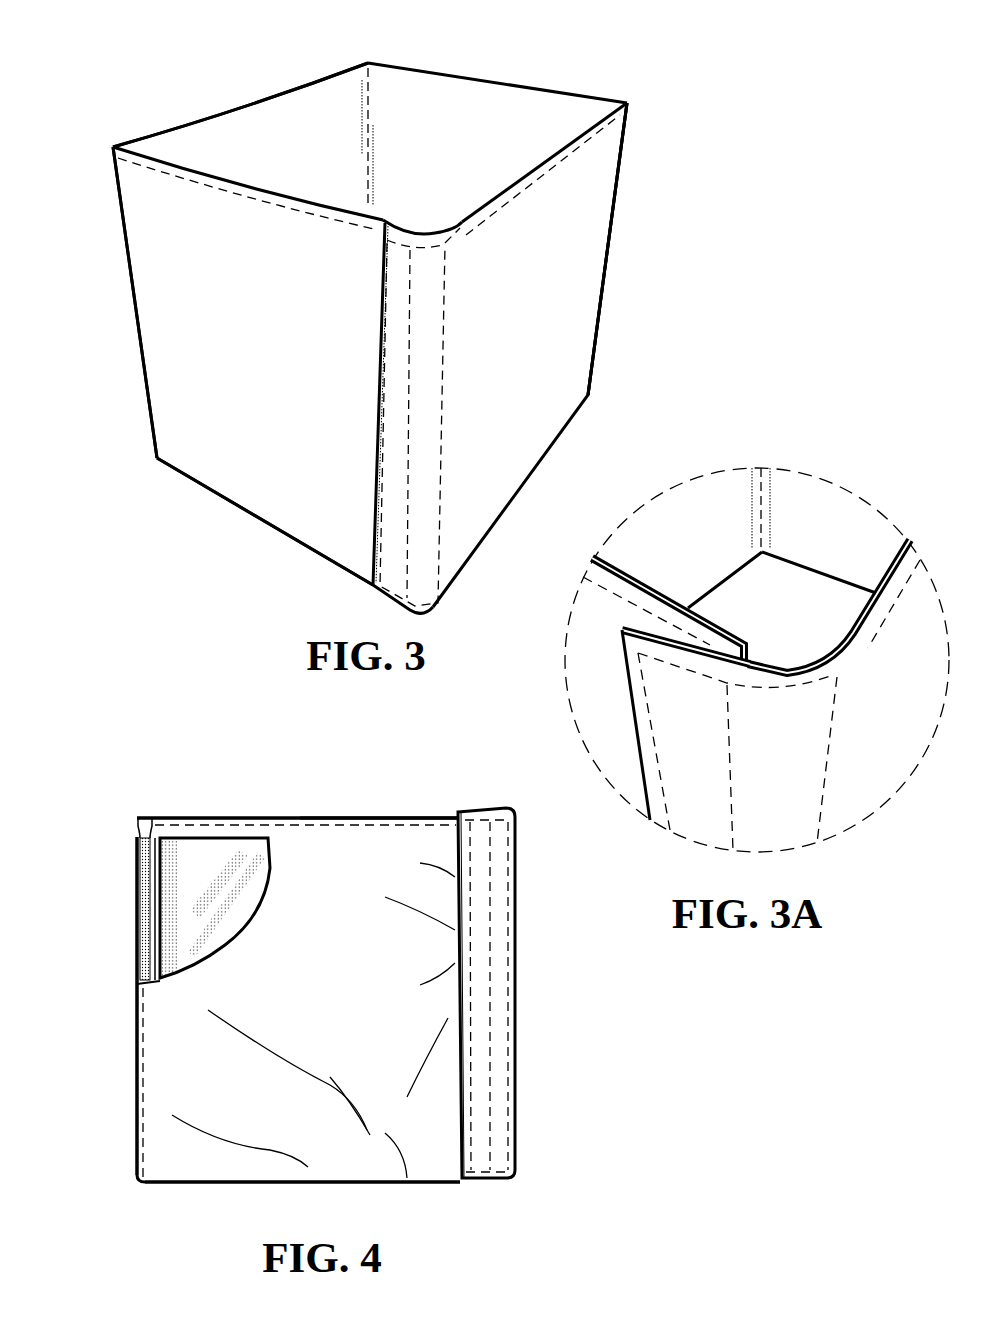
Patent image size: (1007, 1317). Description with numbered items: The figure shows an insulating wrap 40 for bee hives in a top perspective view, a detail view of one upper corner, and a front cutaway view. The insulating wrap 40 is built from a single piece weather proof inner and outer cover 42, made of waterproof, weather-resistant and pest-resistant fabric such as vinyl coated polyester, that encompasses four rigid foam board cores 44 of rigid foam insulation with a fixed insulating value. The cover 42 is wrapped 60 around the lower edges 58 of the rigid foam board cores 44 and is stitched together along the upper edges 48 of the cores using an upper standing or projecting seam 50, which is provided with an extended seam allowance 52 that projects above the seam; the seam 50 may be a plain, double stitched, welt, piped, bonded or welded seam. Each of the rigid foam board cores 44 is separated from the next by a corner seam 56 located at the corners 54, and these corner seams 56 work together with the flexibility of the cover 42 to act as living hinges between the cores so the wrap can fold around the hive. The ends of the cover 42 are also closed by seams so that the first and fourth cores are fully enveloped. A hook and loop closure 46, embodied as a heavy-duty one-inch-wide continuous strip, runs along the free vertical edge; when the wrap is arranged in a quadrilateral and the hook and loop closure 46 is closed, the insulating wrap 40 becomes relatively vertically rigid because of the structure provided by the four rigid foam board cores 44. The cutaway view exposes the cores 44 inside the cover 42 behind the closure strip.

In FIG. 3, the insulating wrap 40 is at (636, 262).
In FIG. 3A, the insulating wrap 40 is at (860, 470).
In FIG. 4, the insulating wrap 40 is at (520, 1058).
In FIG. 3, the single piece weather proof inner and outer cover 42 is at (600, 205).
In FIG. 3A, the single piece weather proof inner and outer cover 42 is at (902, 772).
In FIG. 4, the single piece weather proof inner and outer cover 42 is at (385, 1133).
In FIG. 4, the rigid foam board cores 44 is at (222, 848).
In FIG. 3, the hook and loop closure 46 is at (372, 580).
In FIG. 3A, the hook and loop closure 46 is at (697, 778).
In FIG. 4, the hook and loop closure 46 is at (478, 835).
In FIG. 3, the upper edges 48 is at (170, 128).
In FIG. 3A, the upper edges 48 is at (890, 550).
In FIG. 4, the upper edges 48 is at (415, 815).
In FIG. 3, the upper standing or projecting seam 50 is at (237, 108).
In FIG. 3A, the upper standing or projecting seam 50 is at (907, 540).
In FIG. 4, the upper standing or projecting seam 50 is at (345, 818).
In FIG. 3, the extended seam allowance 52 is at (300, 85).
In FIG. 3A, the extended seam allowance 52 is at (618, 567).
In FIG. 4, the extended seam allowance 52 is at (138, 815).
In FIG. 3, the corners 54 is at (145, 405).
In FIG. 3A, the corners 54 is at (752, 470).
In FIG. 4, the corners 54 is at (137, 1078).
In FIG. 3, the corner seam 56 is at (368, 120).
In FIG. 3A, the corner seam 56 is at (765, 497).
In FIG. 4, the corner seam 56 is at (515, 970).
In FIG. 3, the lower edges 58 is at (200, 488).
In FIG. 4, the lower edges 58 is at (185, 1188).
In FIG. 3, the wrapped 60 is at (255, 522).
In FIG. 4, the wrapped 60 is at (258, 1188).